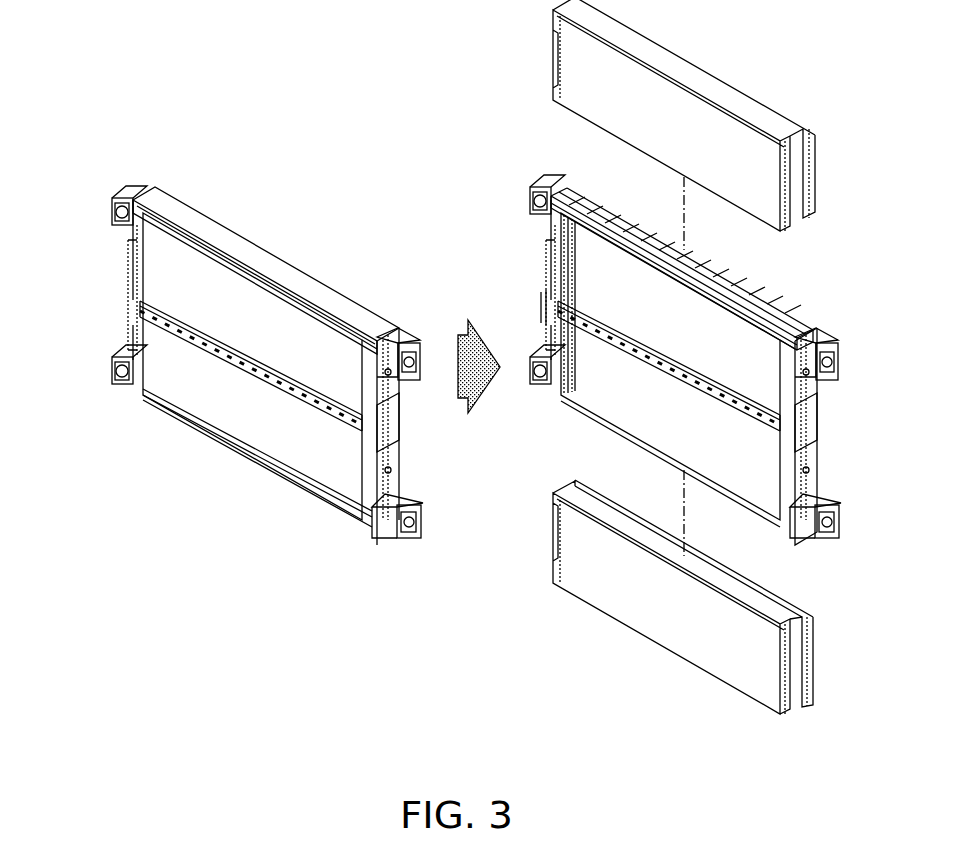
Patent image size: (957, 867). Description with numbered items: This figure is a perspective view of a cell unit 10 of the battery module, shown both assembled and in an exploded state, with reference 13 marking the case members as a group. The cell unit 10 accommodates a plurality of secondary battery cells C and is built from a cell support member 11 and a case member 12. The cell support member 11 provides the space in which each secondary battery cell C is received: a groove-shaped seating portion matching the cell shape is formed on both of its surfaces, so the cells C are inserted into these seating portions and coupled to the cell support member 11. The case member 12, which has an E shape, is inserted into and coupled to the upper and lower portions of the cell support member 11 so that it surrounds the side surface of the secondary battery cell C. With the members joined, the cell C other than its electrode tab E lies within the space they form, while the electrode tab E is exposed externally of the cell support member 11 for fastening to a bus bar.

The cell unit 10 is at (128, 297).
The cell support member 11 is at (587, 197).
The case member 12 is at (590, 68).
The cover plates 13 is at (478, 63).
The secondary battery cell C is at (750, 383).
The electrode tab E is at (797, 477).